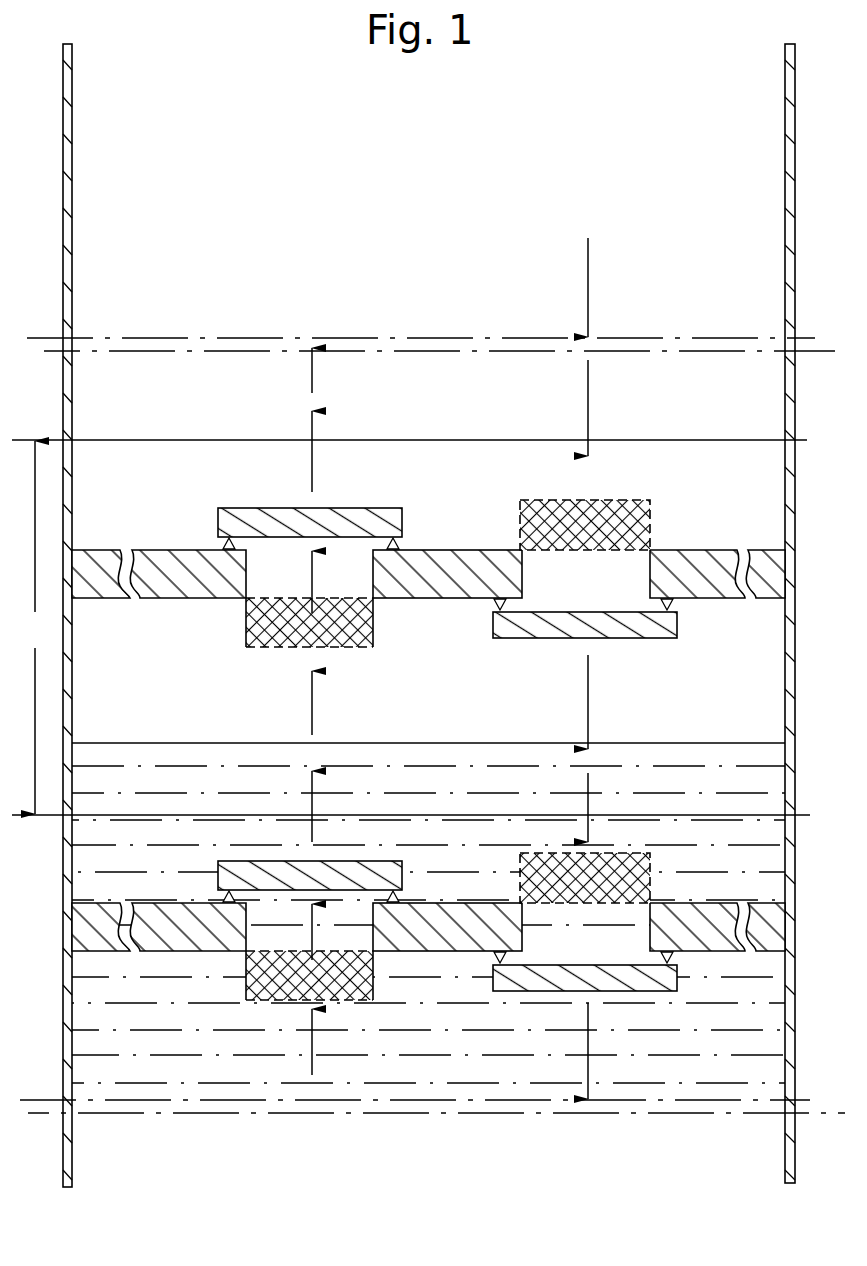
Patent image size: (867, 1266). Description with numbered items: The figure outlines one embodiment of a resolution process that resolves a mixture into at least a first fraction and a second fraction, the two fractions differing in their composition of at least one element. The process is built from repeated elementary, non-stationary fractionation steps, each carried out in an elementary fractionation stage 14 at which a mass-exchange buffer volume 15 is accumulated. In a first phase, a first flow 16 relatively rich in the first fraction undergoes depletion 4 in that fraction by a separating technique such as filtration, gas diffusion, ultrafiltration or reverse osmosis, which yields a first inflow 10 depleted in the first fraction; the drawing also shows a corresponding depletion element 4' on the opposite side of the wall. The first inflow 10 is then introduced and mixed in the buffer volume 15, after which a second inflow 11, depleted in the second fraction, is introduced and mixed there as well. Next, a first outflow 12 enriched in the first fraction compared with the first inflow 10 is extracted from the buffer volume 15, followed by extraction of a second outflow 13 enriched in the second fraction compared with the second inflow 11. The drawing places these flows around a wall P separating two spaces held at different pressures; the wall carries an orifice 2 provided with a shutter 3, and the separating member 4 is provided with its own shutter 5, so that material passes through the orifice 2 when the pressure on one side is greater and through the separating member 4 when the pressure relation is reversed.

The orifice 2 is at (258, 572).
The shutter 3 is at (347, 513).
The separating member 4 is at (610, 686).
The porous body below panel 4' is at (339, 808).
The shutter 5 is at (627, 638).
The panel P is at (692, 550).
The first inflow 10 is at (588, 700).
The second inflow 11 is at (312, 802).
The first outflow 12 is at (588, 800).
The second outflow 13 is at (312, 708).
The elementary fractionation stage 14 is at (38, 627).
The mass-exchange buffer volume 15 is at (710, 758).
The first flow 16 is at (588, 388).